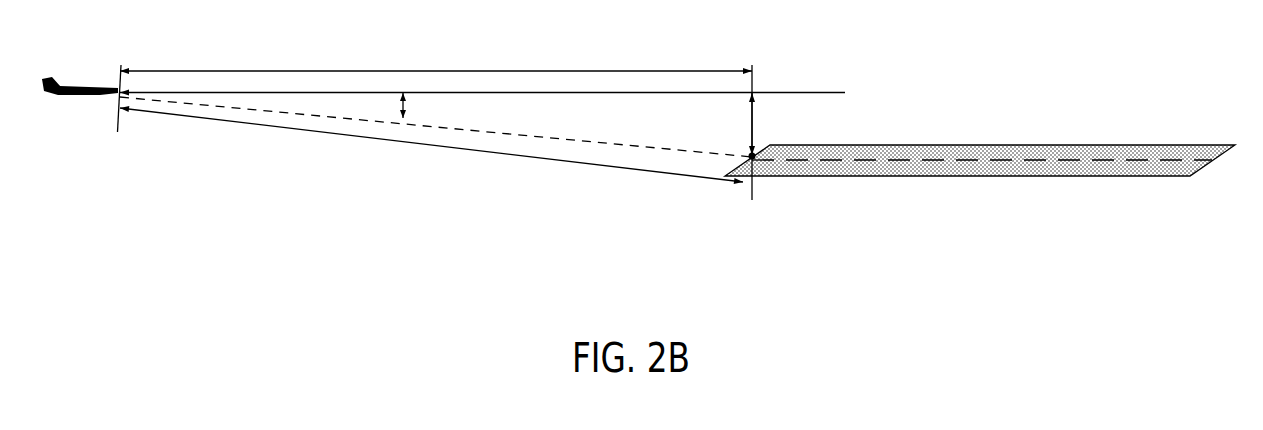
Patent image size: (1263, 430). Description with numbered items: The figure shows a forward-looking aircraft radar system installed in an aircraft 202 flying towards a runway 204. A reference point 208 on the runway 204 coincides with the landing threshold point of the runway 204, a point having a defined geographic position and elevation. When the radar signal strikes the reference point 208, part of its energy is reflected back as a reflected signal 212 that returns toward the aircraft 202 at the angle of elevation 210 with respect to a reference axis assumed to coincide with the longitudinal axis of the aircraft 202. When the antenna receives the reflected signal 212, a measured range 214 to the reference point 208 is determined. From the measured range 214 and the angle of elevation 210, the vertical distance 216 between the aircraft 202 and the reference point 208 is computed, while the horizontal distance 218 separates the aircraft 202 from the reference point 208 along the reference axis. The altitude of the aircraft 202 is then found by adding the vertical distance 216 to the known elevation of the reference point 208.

The aircraft 202 is at (80, 117).
The runway 204 is at (1040, 150).
The reference point 208 is at (760, 163).
The angle of elevation 210 is at (523, 107).
The reflected signal 212 is at (238, 113).
The measured range 214 is at (431, 150).
The vertical distance 216 is at (860, 124).
The Horizontal Distance 218 is at (436, 58).